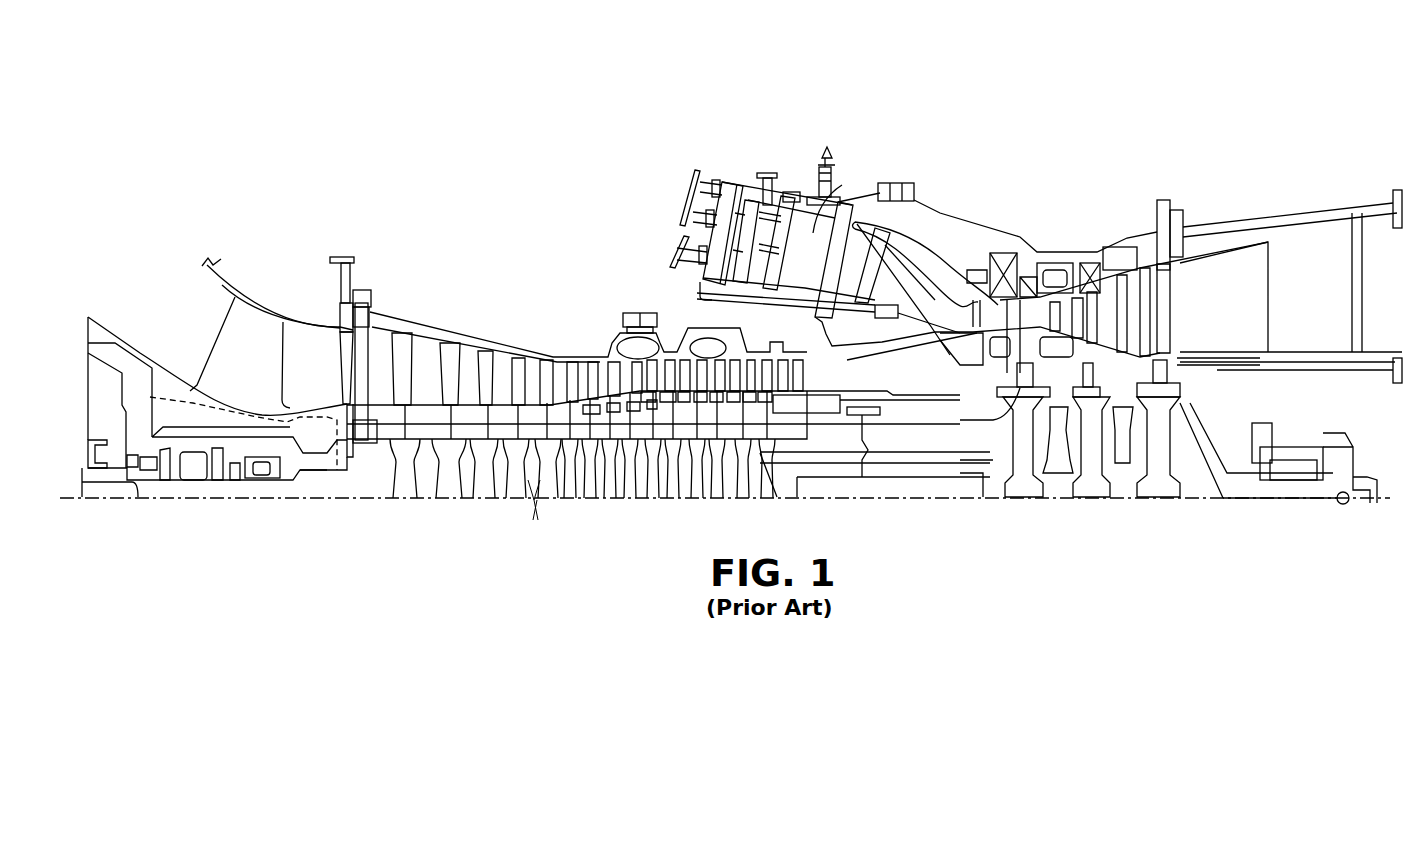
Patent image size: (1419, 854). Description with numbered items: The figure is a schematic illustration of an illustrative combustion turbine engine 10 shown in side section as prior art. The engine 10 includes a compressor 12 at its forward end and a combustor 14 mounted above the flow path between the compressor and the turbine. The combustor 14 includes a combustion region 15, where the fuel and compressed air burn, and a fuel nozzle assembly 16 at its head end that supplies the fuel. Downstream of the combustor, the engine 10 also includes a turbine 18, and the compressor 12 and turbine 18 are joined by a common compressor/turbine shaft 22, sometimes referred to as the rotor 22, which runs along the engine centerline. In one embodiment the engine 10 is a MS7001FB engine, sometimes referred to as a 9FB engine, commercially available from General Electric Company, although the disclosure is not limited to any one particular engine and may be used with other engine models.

The combustion turbine engine 10 is at (243, 120).
The compressor 12 is at (467, 331).
The combustor 14 is at (835, 108).
The combustion region 15 is at (813, 237).
The fuel nozzle assembly 16 is at (743, 183).
The turbine 18 is at (1140, 247).
The common compressor/turbine shaft 22 is at (385, 443).